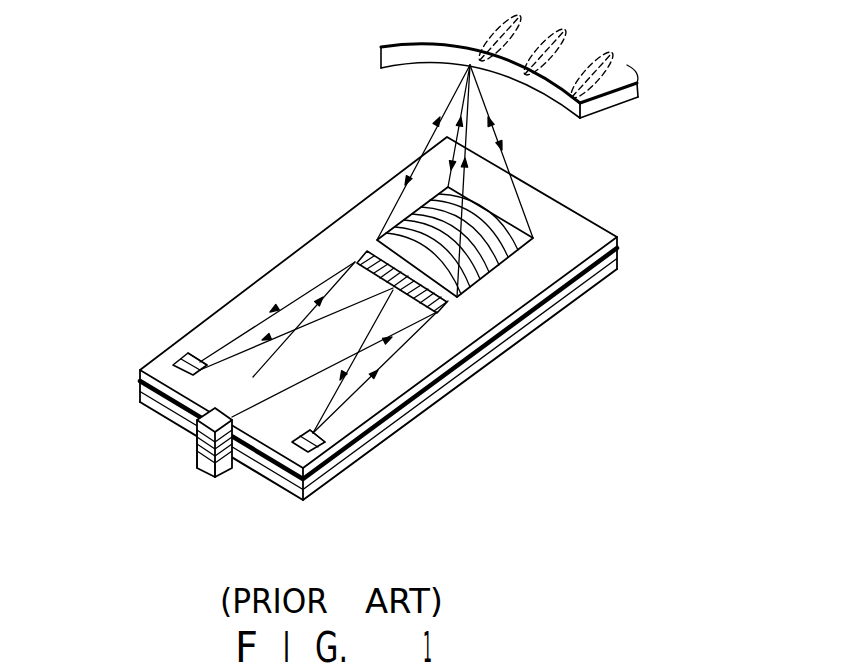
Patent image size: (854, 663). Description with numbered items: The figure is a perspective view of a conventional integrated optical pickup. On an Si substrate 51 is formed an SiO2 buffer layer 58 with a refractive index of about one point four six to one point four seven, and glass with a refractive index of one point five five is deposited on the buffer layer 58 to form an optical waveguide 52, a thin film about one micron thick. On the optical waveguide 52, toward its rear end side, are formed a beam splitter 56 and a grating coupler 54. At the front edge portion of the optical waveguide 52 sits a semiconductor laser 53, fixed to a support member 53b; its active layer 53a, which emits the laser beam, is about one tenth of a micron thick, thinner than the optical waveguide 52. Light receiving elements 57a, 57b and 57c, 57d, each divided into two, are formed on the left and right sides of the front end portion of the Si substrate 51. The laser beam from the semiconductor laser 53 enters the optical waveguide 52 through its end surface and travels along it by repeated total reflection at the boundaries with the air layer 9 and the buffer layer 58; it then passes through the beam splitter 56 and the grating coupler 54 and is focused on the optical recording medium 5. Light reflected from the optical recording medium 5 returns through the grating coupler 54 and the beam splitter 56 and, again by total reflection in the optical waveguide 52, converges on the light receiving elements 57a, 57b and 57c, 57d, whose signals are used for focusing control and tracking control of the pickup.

The optical recording medium 5 is at (640, 93).
The air layer 9 is at (322, 189).
The Si substrate 51 is at (470, 373).
The optical waveguide 52 is at (587, 237).
The semiconductor laser 53 is at (162, 433).
The active layer 53a is at (195, 440).
The support member 53b is at (218, 477).
The grating coupler 54 is at (528, 232).
The beam splitter 56 is at (445, 308).
The light receiving element 57a is at (178, 366).
The light receiving element 57b is at (198, 368).
The light receiving element 57c is at (310, 440).
The light receiving element 57d is at (325, 443).
The SiO2 buffer layer 58 is at (313, 480).